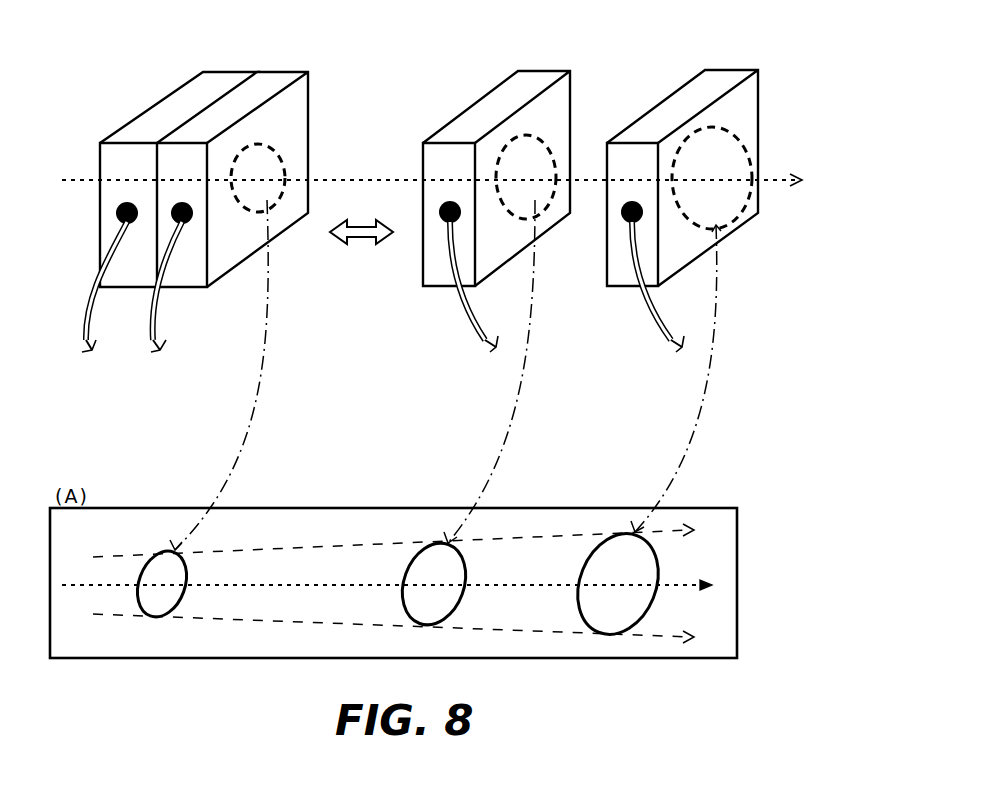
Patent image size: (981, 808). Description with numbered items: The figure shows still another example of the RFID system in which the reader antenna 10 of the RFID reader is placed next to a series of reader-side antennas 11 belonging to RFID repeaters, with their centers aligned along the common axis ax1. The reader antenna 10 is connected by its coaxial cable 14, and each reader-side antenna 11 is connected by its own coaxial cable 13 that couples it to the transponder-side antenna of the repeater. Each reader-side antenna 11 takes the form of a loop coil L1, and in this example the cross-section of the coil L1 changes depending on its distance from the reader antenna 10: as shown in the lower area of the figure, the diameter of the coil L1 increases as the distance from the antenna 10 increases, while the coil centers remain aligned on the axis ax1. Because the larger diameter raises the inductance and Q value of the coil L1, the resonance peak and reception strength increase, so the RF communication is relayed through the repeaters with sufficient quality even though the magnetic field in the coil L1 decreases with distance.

The reader antenna 10 is at (217, 82).
The reader-side antenna 11 is at (268, 82).
The coaxial cable 13 is at (157, 297).
The coaxial cable 14 is at (82, 297).
The coil L1 is at (290, 140).
The axis ax1 is at (456, 180).